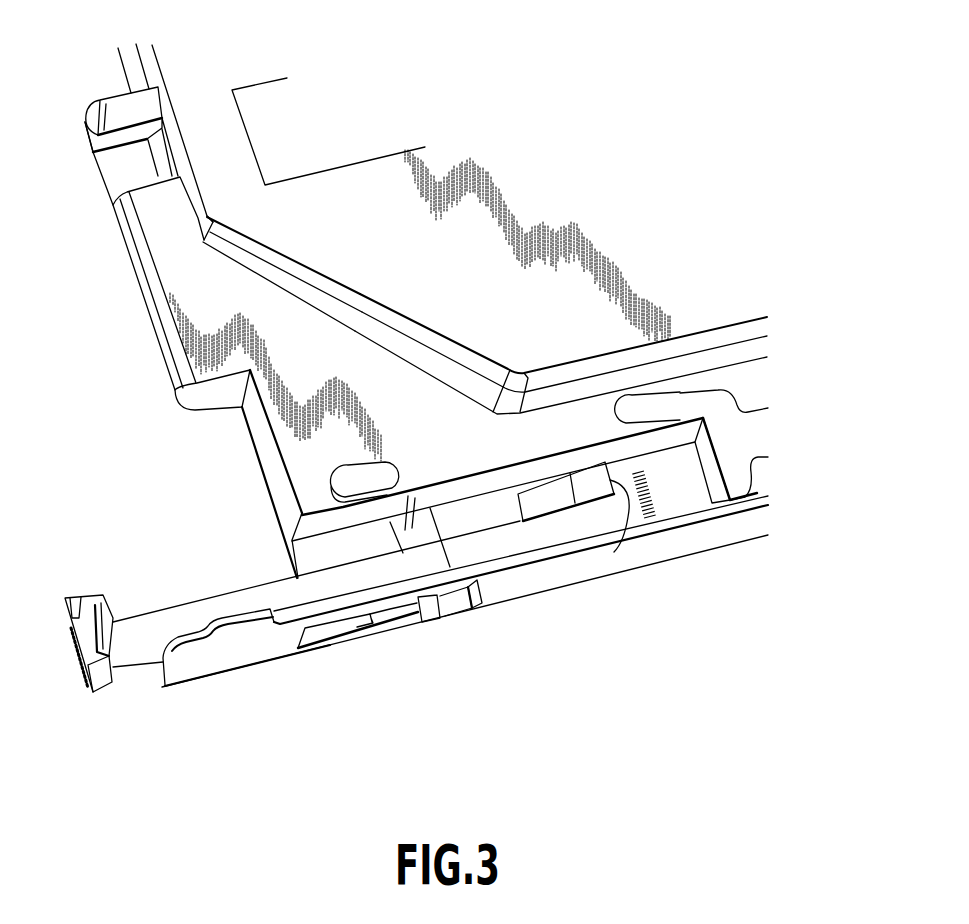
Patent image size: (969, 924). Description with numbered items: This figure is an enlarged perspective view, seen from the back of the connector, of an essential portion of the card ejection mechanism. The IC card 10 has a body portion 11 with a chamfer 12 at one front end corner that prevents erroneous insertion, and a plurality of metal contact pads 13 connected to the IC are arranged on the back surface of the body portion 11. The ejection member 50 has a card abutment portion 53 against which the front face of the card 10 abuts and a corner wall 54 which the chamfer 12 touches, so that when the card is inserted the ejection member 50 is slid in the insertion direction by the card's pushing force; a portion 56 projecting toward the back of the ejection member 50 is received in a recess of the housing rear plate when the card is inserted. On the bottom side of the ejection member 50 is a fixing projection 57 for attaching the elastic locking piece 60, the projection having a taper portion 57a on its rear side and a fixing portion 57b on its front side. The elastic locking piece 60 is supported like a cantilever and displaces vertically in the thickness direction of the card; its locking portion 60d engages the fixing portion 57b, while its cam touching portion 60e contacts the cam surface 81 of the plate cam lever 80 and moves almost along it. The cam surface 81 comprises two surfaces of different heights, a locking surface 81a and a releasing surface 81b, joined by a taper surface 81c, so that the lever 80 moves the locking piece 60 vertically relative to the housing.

The IC card 10 is at (499, 260).
The body portion 11 is at (478, 332).
The chamfer 12 is at (420, 342).
The metal contact pads 13 is at (364, 140).
The ejection member 50 is at (293, 452).
The card abutment portion 53 is at (153, 142).
The corner wall 54 is at (268, 263).
The portion projected to the direction of the back 56 is at (172, 297).
The fixing projection 57 is at (550, 557).
The taper portion 57a is at (530, 505).
The fixing portion 57b is at (618, 482).
The elastic locking piece 60 is at (416, 568).
The locking portion 60d is at (408, 496).
The cam touching portion 60e is at (437, 618).
The plate cam lever 80 is at (669, 548).
The cam surface 81 is at (386, 665).
The locking surface 81a is at (315, 645).
The releasing surface 81b is at (466, 637).
The taper surface 81c is at (368, 620).